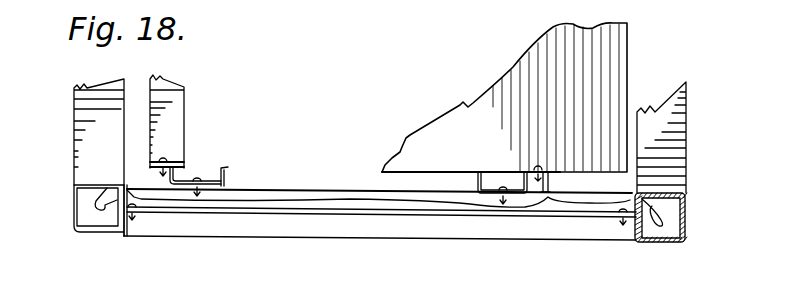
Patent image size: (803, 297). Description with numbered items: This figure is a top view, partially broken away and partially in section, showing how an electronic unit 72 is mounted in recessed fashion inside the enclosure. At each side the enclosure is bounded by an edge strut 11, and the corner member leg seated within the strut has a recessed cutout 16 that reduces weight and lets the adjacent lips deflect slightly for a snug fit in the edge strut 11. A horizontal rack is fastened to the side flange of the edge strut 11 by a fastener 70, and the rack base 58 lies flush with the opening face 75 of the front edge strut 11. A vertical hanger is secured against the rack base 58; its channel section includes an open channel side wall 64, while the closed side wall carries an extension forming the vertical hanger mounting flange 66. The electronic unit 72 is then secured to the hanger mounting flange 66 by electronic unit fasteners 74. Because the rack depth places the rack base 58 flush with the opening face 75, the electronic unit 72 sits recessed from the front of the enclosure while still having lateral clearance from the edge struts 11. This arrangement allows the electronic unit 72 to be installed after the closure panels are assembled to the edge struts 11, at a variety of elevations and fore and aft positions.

The edge strut 11 is at (72, 194).
The cutout 16 is at (102, 213).
The rear panel base 58 is at (272, 188).
The open channel side wall 64 is at (227, 168).
The vertical hanger mounting flange 66 is at (178, 167).
The fastener 70 is at (134, 219).
The electronic unit 72 is at (508, 110).
The electronic unit fastener 74 is at (166, 163).
The opening face 75 is at (672, 192).